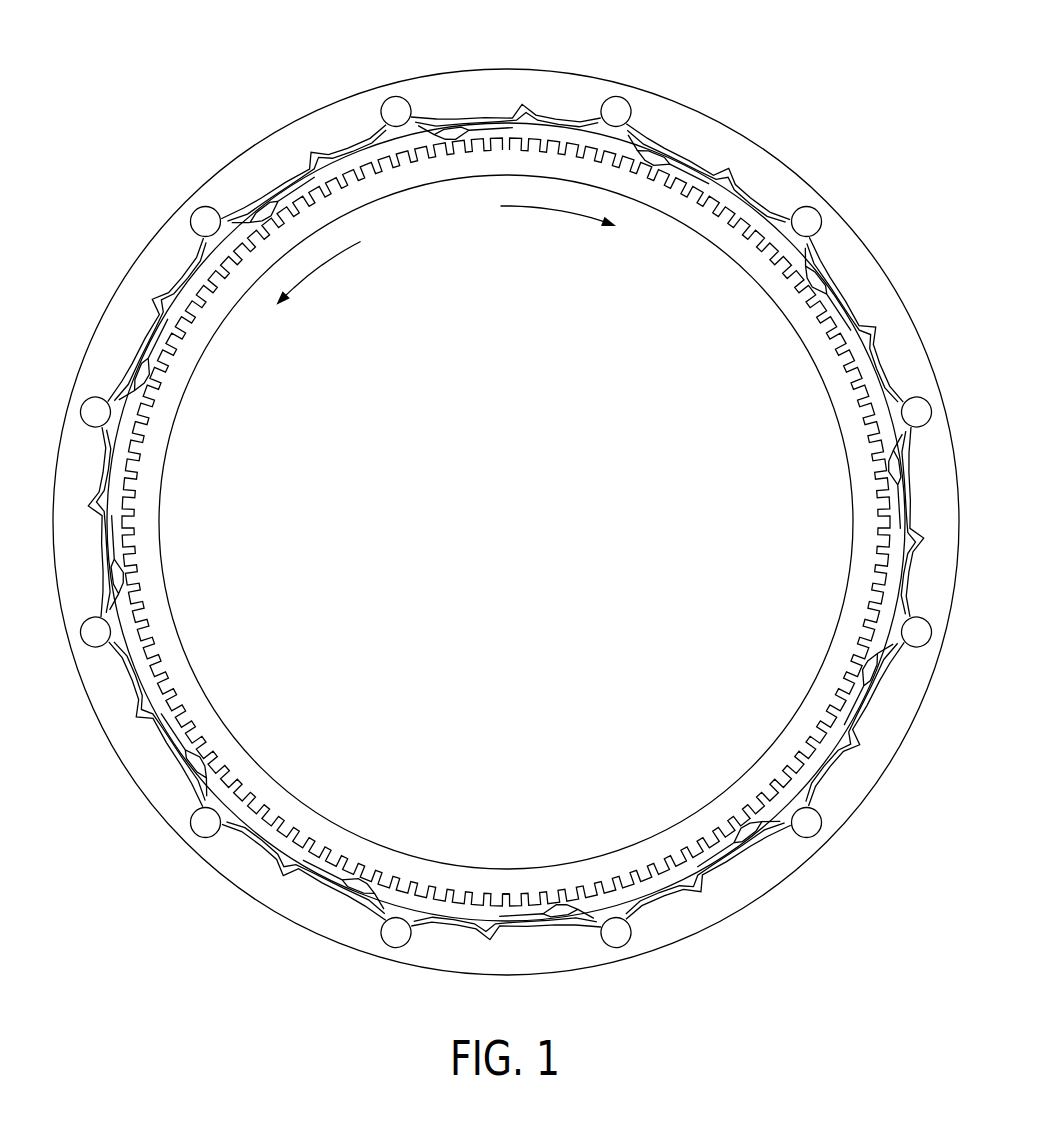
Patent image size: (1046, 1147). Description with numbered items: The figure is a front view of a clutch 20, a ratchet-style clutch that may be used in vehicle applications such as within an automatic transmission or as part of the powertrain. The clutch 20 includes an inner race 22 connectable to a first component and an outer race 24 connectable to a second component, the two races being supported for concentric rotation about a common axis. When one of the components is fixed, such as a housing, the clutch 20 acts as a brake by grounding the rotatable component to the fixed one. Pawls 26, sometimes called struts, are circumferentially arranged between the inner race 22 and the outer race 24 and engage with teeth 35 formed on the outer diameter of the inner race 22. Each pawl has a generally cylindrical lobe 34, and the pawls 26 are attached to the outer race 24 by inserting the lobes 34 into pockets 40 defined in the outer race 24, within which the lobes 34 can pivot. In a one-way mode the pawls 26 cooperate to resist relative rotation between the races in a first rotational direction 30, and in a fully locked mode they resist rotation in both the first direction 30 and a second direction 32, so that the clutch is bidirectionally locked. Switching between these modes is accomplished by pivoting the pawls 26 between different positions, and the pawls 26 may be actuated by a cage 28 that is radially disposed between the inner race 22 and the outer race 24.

The clutch 20 is at (108, 132).
The inner race 22 is at (485, 885).
The outer race 24 is at (738, 890).
The pawls 26 is at (441, 150).
The cage 28 is at (830, 775).
The first rotational direction 30 is at (343, 260).
The second direction 32 is at (538, 214).
The lobe 34 is at (391, 940).
The teeth 35 is at (252, 808).
The pockets 40 is at (582, 115).